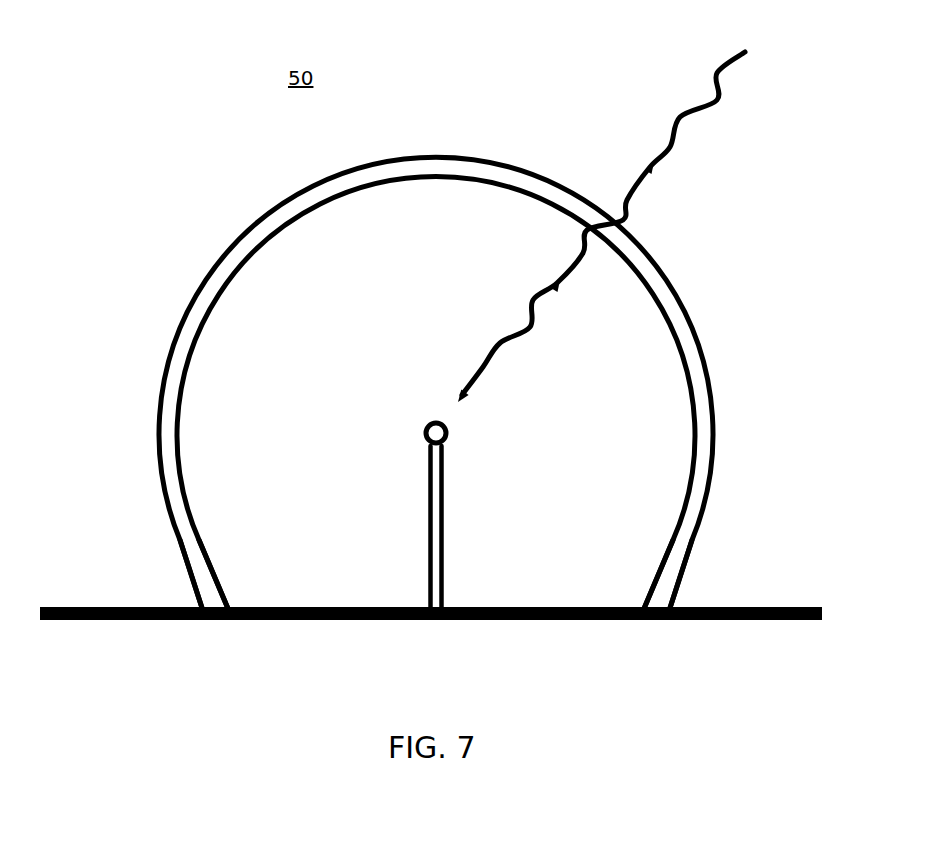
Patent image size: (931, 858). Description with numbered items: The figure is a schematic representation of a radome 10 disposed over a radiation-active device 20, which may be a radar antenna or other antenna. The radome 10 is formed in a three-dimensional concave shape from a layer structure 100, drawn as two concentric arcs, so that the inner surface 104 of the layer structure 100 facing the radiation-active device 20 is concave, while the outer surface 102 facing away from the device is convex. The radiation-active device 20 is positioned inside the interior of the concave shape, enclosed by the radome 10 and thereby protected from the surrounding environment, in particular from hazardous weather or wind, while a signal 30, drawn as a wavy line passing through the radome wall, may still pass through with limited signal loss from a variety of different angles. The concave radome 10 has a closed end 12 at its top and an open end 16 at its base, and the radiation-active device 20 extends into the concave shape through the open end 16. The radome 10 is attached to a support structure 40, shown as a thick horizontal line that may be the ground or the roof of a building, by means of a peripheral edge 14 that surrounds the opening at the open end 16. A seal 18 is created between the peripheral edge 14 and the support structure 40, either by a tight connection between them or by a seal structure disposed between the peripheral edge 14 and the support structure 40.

The radome 10 is at (532, 140).
The closed end 12 is at (170, 235).
The peripheral edge 14 is at (190, 597).
The open end 16 is at (125, 508).
The seal 18 is at (245, 596).
The radiation-active device 20 is at (476, 492).
The signal 30 is at (706, 138).
The support structure 40 is at (774, 595).
The layer structure 100 is at (697, 388).
The outer surface 102 is at (683, 275).
The inner surface 104 is at (638, 302).